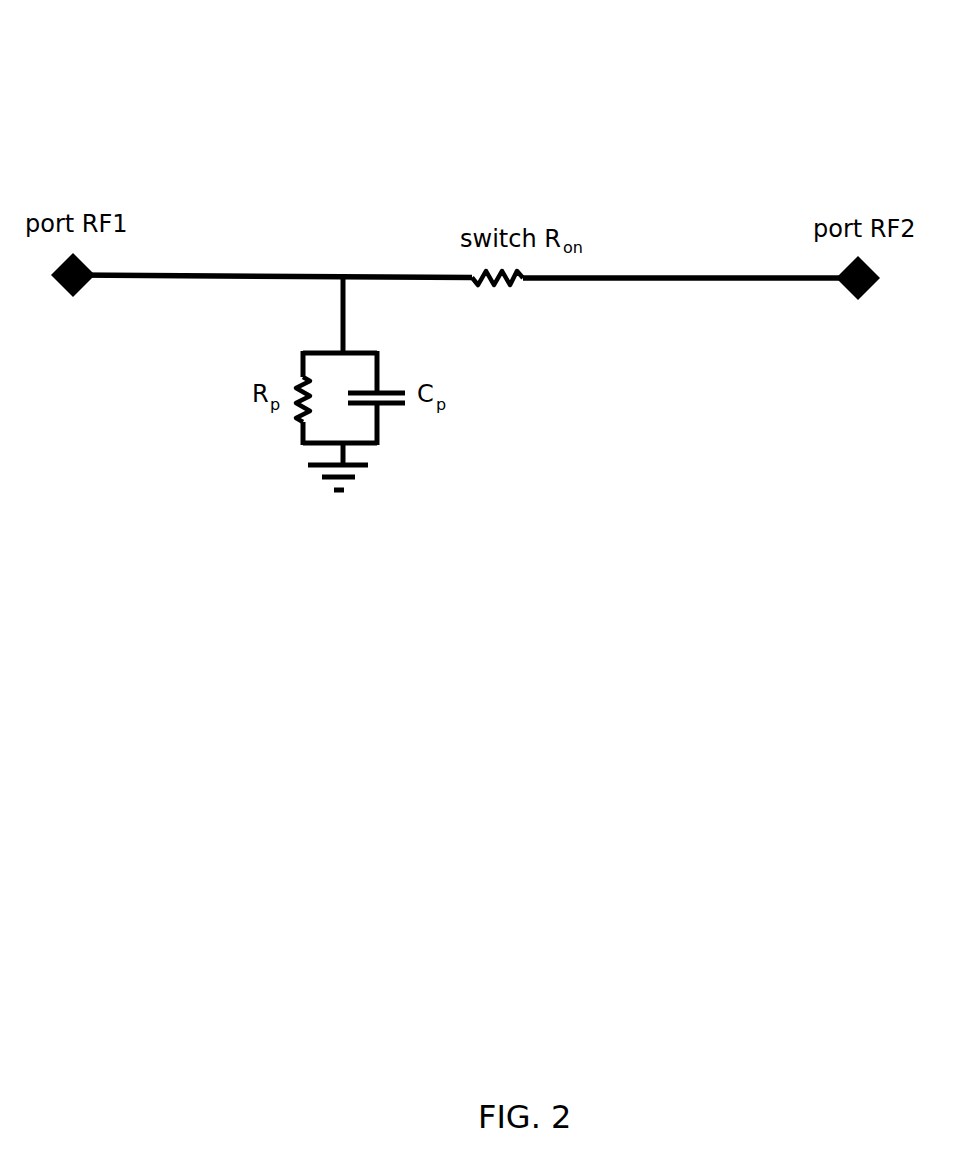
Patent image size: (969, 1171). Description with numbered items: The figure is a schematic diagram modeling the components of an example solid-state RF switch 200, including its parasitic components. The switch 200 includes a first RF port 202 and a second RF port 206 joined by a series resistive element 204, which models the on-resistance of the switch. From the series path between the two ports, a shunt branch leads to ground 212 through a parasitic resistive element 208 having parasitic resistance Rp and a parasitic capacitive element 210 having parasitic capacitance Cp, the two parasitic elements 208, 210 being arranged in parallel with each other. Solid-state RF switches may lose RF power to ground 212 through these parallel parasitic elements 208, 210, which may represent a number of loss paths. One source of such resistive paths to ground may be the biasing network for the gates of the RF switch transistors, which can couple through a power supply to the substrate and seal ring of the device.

The solid-state RF switch 200 is at (821, 45).
The first RF port 202 is at (73, 297).
The series resistive element 204 is at (512, 284).
The second RF port 206 is at (857, 300).
The parasitic resistive element 208 is at (297, 378).
The parasitic capacitive element 210 is at (398, 406).
The ground 212 is at (350, 483).